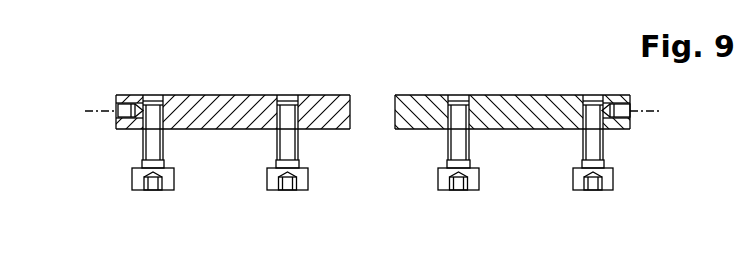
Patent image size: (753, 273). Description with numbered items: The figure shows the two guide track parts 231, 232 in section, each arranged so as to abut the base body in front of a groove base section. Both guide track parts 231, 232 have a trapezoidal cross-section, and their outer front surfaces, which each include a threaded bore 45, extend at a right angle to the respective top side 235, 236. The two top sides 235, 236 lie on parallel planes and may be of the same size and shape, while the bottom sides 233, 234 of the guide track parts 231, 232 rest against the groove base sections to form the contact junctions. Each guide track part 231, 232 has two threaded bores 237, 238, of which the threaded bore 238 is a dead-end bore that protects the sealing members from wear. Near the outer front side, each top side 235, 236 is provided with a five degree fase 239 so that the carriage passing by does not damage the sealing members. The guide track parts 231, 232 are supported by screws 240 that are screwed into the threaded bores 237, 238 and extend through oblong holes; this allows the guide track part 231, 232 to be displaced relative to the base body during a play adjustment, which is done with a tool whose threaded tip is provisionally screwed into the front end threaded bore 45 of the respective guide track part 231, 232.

The threaded bore 45 is at (118, 105).
The guide track part 231 is at (198, 112).
The guide track part 232 is at (533, 110).
The bottom side 233 is at (224, 129).
The bottom side 234 is at (522, 129).
The top side 235 is at (237, 95).
The top side 236 is at (495, 95).
The threaded bore 237 is at (288, 100).
The threaded bore 238 is at (152, 105).
The fase 239 is at (120, 97).
The screw 240 is at (141, 182).